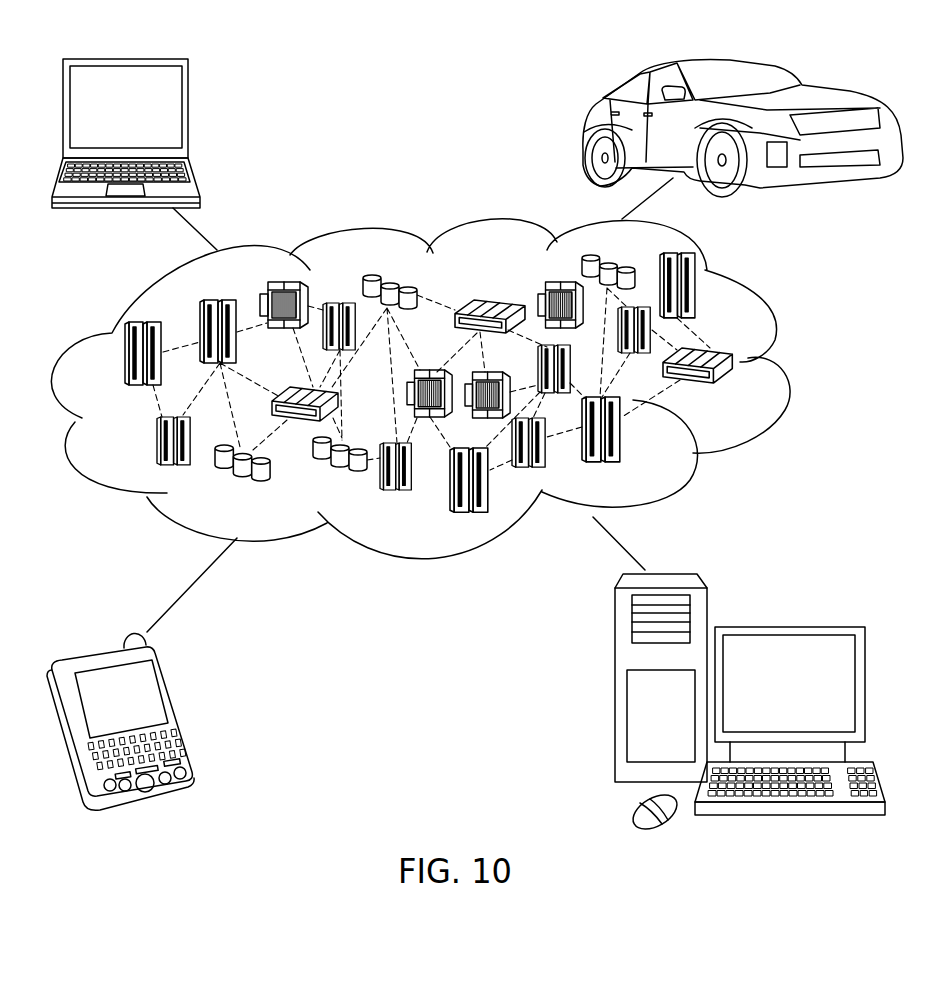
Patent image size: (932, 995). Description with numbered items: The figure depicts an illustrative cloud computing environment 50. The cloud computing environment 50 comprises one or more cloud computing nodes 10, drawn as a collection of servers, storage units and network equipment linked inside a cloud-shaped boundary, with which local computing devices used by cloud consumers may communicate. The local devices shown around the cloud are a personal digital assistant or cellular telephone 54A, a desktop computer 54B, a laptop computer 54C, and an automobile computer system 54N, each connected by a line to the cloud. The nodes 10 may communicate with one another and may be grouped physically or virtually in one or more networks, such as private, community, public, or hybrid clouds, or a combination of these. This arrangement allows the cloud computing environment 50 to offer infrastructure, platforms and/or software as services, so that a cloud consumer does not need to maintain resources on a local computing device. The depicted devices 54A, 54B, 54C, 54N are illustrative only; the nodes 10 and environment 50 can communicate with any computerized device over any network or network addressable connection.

The cloud computing node 10 is at (735, 390).
The cloud computing environment 50 is at (445, 389).
The personal digital assistant (PDA) or cellular telephone 54A is at (178, 710).
The desktop computer 54B is at (785, 627).
The laptop computer 54C is at (188, 112).
The automobile computer system 54N is at (590, 132).